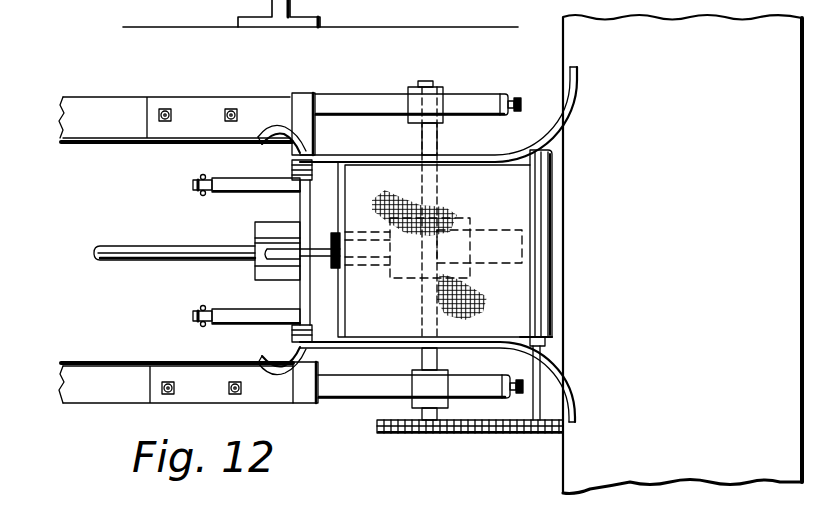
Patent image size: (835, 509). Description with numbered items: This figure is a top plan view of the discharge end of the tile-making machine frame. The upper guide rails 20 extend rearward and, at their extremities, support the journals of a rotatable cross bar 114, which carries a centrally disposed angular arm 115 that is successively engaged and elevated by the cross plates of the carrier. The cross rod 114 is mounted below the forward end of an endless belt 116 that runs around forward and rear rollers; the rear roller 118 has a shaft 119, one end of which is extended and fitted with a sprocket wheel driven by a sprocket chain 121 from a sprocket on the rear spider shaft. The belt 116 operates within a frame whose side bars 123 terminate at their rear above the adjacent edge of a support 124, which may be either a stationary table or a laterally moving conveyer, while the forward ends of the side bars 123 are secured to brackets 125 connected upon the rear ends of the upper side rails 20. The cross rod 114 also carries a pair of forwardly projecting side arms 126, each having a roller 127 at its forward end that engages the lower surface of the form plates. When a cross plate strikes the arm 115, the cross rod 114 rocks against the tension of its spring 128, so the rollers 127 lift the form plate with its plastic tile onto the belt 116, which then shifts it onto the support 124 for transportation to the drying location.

The upper guide rails 20 is at (126, 131).
The rotatable cross bar 114 is at (300, 294).
The angular arm 115 is at (255, 246).
The endless belt 116 is at (525, 190).
The rear roller 118 is at (540, 344).
The shaft 119 is at (540, 400).
The sprocket chain 121 is at (493, 424).
The side bars 123 is at (358, 154).
The support 124 is at (682, 254).
The brackets 125 is at (269, 102).
The side arms 126 is at (248, 181).
The roller 127 is at (198, 191).
The spring 128 is at (310, 181).